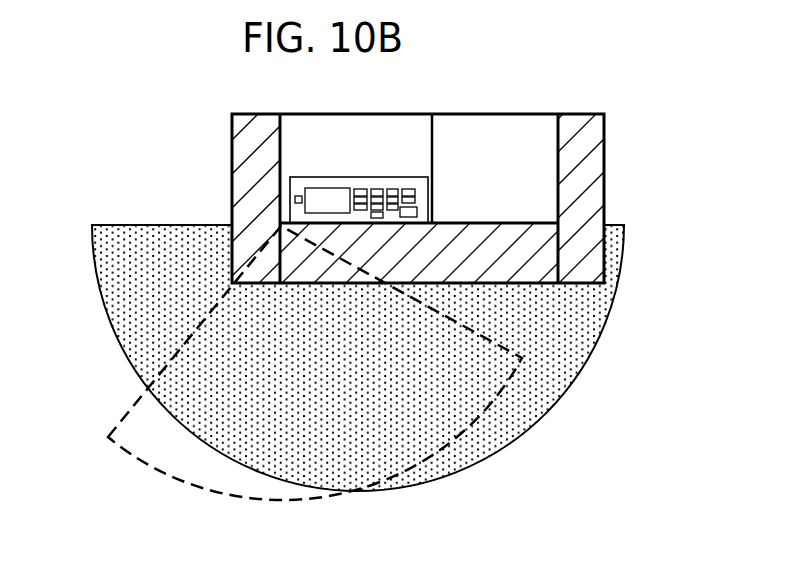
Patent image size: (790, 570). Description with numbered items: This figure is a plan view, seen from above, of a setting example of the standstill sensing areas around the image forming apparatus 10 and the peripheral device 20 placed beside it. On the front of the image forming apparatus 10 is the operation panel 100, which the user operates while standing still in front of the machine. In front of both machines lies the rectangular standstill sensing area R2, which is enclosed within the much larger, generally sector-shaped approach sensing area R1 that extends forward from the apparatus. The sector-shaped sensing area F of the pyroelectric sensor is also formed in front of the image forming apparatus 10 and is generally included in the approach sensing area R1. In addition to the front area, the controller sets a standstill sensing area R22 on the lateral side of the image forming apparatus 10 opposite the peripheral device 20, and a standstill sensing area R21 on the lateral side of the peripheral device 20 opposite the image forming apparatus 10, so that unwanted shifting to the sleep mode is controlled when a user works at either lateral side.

The image forming apparatus 10 is at (292, 160).
The peripheral device 20 is at (547, 140).
The operation panel 100 is at (292, 190).
The approach sensing area R1 is at (457, 473).
The standstill sensing area R2 is at (552, 245).
The standstill sensing area R21 is at (592, 182).
The standstill sensing area R22 is at (253, 134).
The sensing area F is at (155, 467).